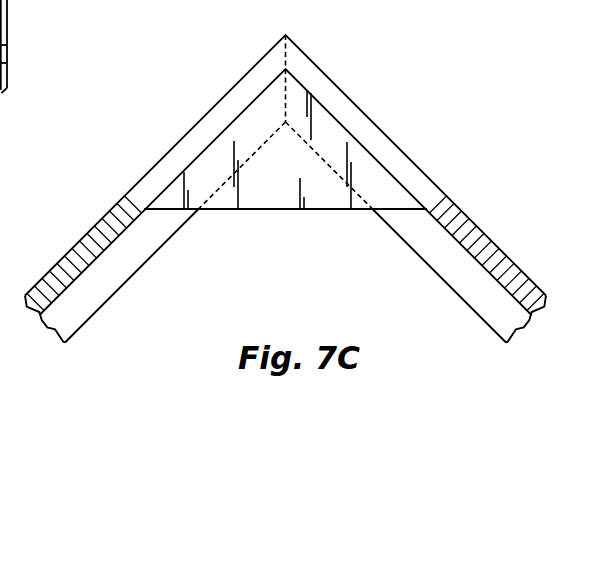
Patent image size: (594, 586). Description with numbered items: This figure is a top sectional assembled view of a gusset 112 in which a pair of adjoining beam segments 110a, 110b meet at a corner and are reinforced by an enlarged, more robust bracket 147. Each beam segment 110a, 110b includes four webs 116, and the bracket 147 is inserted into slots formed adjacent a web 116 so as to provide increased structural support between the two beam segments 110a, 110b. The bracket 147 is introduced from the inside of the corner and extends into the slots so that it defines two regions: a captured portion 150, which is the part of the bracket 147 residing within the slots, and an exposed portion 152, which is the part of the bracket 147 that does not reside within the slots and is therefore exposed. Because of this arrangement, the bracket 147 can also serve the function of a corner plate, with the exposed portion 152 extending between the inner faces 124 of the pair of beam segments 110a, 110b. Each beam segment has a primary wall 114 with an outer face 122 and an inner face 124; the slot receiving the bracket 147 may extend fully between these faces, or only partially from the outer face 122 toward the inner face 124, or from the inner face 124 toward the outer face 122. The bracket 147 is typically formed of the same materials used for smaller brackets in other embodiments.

The beam segment 110a is at (96, 200).
The beam segment 110b is at (490, 215).
The gusset 112 is at (391, 95).
The primary wall 114 is at (20, 3).
The web 116 is at (482, 295).
The outer face 122 is at (63, 257).
The inner face 124 is at (8, 20).
The bracket 147 is at (352, 227).
The captured portion 150 is at (382, 160).
The exposed portion 152 is at (258, 200).